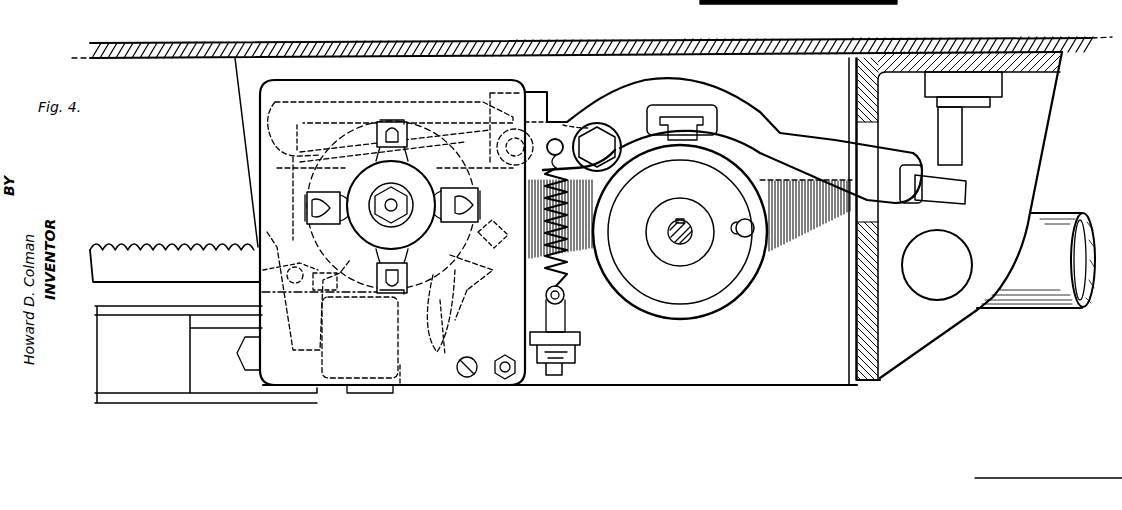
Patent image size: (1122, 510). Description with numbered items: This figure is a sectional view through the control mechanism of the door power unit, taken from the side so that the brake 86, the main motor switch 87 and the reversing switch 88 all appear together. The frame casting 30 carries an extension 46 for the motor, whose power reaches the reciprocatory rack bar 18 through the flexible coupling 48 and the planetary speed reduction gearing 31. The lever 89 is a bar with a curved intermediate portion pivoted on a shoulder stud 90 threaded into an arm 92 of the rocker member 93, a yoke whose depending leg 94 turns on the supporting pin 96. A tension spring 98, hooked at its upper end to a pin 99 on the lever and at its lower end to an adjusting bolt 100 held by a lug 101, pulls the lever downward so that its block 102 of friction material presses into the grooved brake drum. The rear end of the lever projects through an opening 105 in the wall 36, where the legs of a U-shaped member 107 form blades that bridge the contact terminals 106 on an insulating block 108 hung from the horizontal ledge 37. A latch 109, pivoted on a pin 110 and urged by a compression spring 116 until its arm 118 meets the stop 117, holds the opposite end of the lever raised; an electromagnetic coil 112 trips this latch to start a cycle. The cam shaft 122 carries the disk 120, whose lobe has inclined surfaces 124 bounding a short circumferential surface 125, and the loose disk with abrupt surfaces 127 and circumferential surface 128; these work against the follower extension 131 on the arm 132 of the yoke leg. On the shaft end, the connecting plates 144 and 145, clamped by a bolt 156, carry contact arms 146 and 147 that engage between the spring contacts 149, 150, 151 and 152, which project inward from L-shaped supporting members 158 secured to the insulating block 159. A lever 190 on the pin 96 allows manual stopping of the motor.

The rack bar 18 is at (168, 248).
The frame casting 30 is at (705, 367).
The speed reduction gearing 31 is at (781, 132).
The wall 36 is at (872, 233).
The horizontal ledge 37 is at (1062, 60).
The extension 46 is at (858, 103).
The flexible coupling 48 is at (768, 262).
The brake 86 is at (696, 92).
The main motor switch 87 is at (973, 127).
The reversing switch 88 is at (417, 150).
The lever 89 is at (637, 100).
The shoulder stud 90 is at (597, 135).
The arm 92 is at (563, 125).
The rocker member 93 is at (548, 91).
The depending leg 94 is at (530, 112).
The supporting pin 96 is at (490, 101).
The tension spring 98 is at (570, 273).
The pin 99 is at (563, 149).
The adjusting bolt 100 is at (567, 317).
The lug 101 is at (575, 343).
The block 102 is at (665, 112).
The opening 105 is at (873, 137).
The contact terminals 106 is at (952, 148).
The U-shaped member 107 is at (958, 192).
The insulating block 108 is at (963, 82).
The latch 109 is at (277, 167).
The pin 110 is at (263, 293).
The electromagnetic coil 112 is at (405, 390).
The compression spring 116 is at (345, 335).
The stop 117 is at (316, 291).
The arm 118 is at (263, 270).
The disk 120 is at (431, 266).
The cam shaft 122 is at (376, 207).
The inclined surfaces 124 is at (437, 331).
The circumferential surface 125 is at (441, 311).
The radially extending surfaces 127 is at (482, 277).
The circumferential surface 128 is at (470, 300).
The extension 131 is at (487, 240).
The arm 132 is at (396, 146).
The connecting plate 144 is at (432, 170).
The connecting plate 145 is at (407, 250).
The contact arms 146 is at (392, 160).
The arms 147 is at (400, 215).
The spring contact 149 is at (400, 128).
The spring contact 150 is at (450, 212).
The spring contact 151 is at (380, 290).
The spring contact 152 is at (278, 233).
The bolt 156 is at (390, 198).
The supporting members 158 is at (390, 120).
The insulating block 159 is at (267, 95).
The lever 190 is at (267, 115).